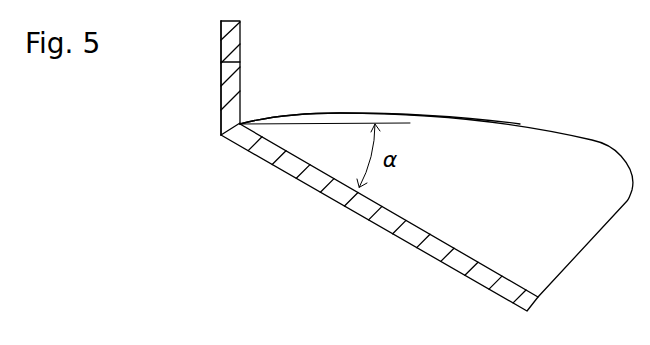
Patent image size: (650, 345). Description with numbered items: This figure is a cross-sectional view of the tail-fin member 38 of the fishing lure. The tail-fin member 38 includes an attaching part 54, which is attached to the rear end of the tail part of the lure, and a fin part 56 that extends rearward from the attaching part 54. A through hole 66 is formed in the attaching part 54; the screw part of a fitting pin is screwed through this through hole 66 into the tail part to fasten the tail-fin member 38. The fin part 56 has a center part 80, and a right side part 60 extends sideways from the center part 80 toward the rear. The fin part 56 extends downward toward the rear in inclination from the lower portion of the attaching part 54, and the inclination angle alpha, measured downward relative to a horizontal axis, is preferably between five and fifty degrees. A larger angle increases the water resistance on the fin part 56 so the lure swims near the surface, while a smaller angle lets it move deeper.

The tail-fin member 38 is at (448, 108).
The attaching part 54 is at (241, 33).
The fin part 56 is at (380, 232).
The right side part 60 is at (541, 150).
The through hole 66 is at (221, 70).
The center part 80 is at (440, 254).